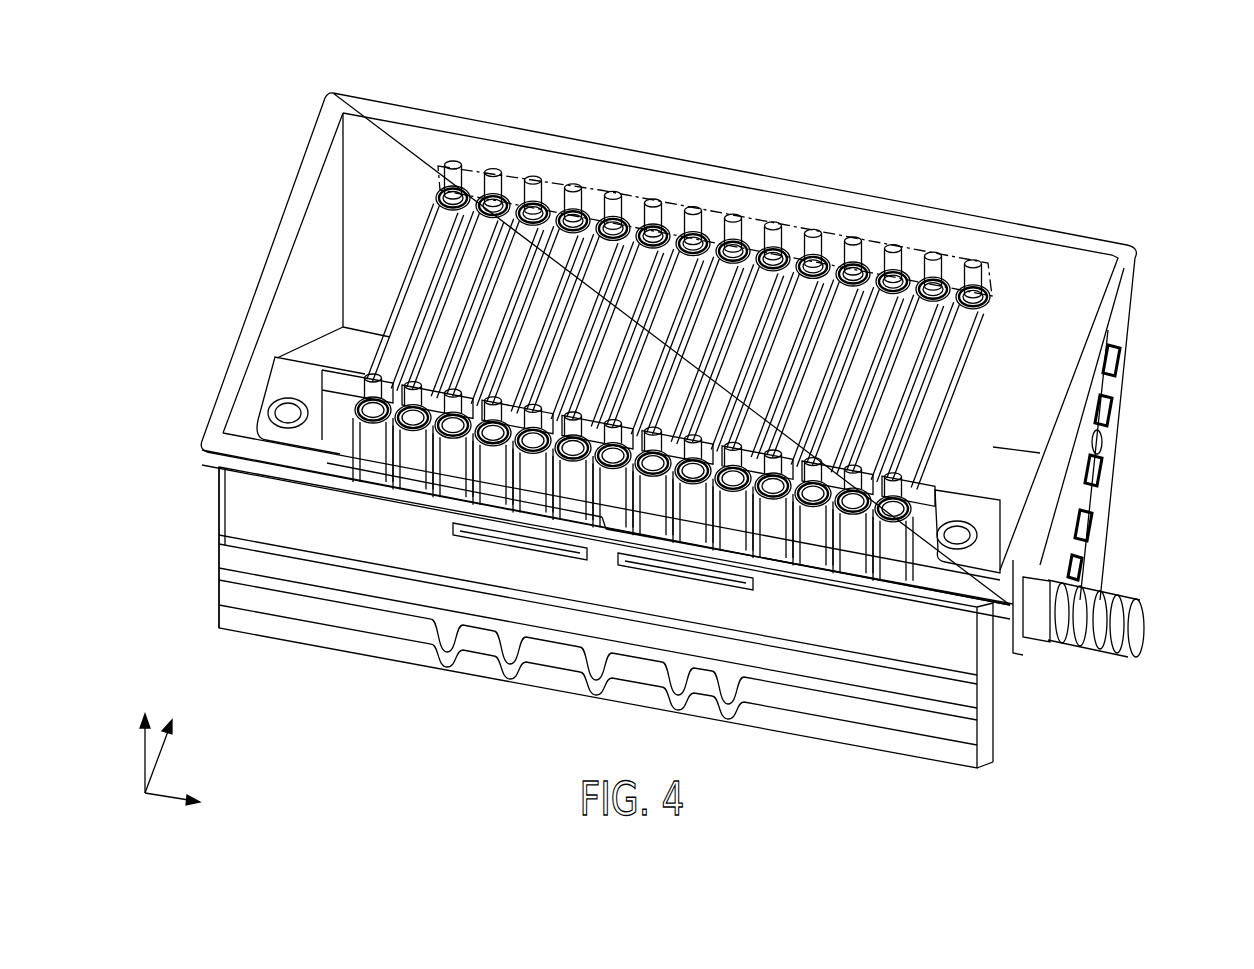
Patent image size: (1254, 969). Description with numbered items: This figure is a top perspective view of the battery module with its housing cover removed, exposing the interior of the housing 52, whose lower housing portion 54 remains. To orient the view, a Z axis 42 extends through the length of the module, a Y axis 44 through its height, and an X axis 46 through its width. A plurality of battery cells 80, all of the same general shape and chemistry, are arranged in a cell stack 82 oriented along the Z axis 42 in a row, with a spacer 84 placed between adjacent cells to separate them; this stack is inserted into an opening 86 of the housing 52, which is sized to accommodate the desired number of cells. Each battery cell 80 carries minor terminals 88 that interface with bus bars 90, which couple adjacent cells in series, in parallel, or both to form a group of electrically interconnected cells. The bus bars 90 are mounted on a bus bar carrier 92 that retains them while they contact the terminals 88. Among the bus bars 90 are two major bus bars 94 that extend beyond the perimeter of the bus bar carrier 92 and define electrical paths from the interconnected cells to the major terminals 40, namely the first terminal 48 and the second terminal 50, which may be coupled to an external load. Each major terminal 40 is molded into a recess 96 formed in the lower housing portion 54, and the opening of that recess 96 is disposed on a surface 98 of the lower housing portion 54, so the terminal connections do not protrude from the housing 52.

The major terminal 40 is at (205, 405).
The Z axis 42 is at (167, 800).
The Y axis 44 is at (143, 760).
The X axis 46 is at (165, 755).
The first terminal 48 is at (947, 547).
The second terminal 50 is at (286, 425).
The housing 52 is at (1108, 165).
The lower housing portion 54 is at (1128, 290).
The battery cells 80 is at (497, 317).
The cell stack 82 is at (598, 574).
The spacer 84 is at (438, 193).
The opening 86 is at (328, 240).
The minor terminals 88 is at (613, 200).
The bus bars 90 is at (430, 398).
The bus bar carrier 92 is at (713, 218).
The major bus bars 94 is at (278, 386).
The recess 96 is at (301, 430).
The surface 98 is at (290, 460).